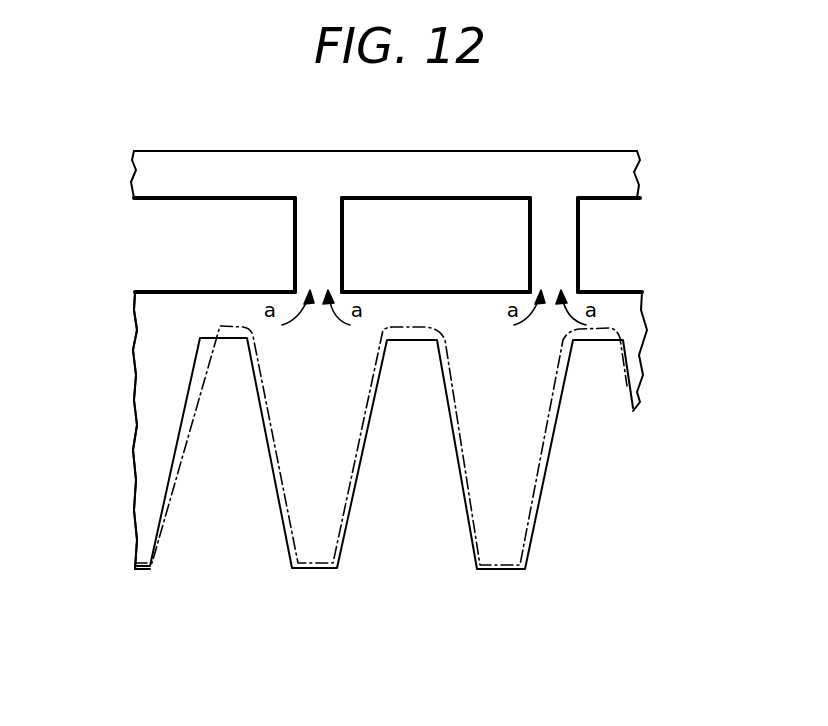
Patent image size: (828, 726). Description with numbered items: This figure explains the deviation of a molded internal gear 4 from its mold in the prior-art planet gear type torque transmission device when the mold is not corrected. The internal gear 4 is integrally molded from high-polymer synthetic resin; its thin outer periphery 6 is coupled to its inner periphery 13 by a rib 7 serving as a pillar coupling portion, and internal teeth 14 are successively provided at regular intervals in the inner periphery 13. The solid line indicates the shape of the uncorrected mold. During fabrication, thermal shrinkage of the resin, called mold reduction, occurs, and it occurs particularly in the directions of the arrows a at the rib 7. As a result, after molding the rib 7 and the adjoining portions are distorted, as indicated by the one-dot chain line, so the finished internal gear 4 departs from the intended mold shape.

The internal gear 4 is at (404, 151).
The outer periphery 6 is at (606, 166).
The rib 7 is at (563, 246).
The inner periphery 13 is at (150, 312).
The internal teeth 14 is at (145, 422).